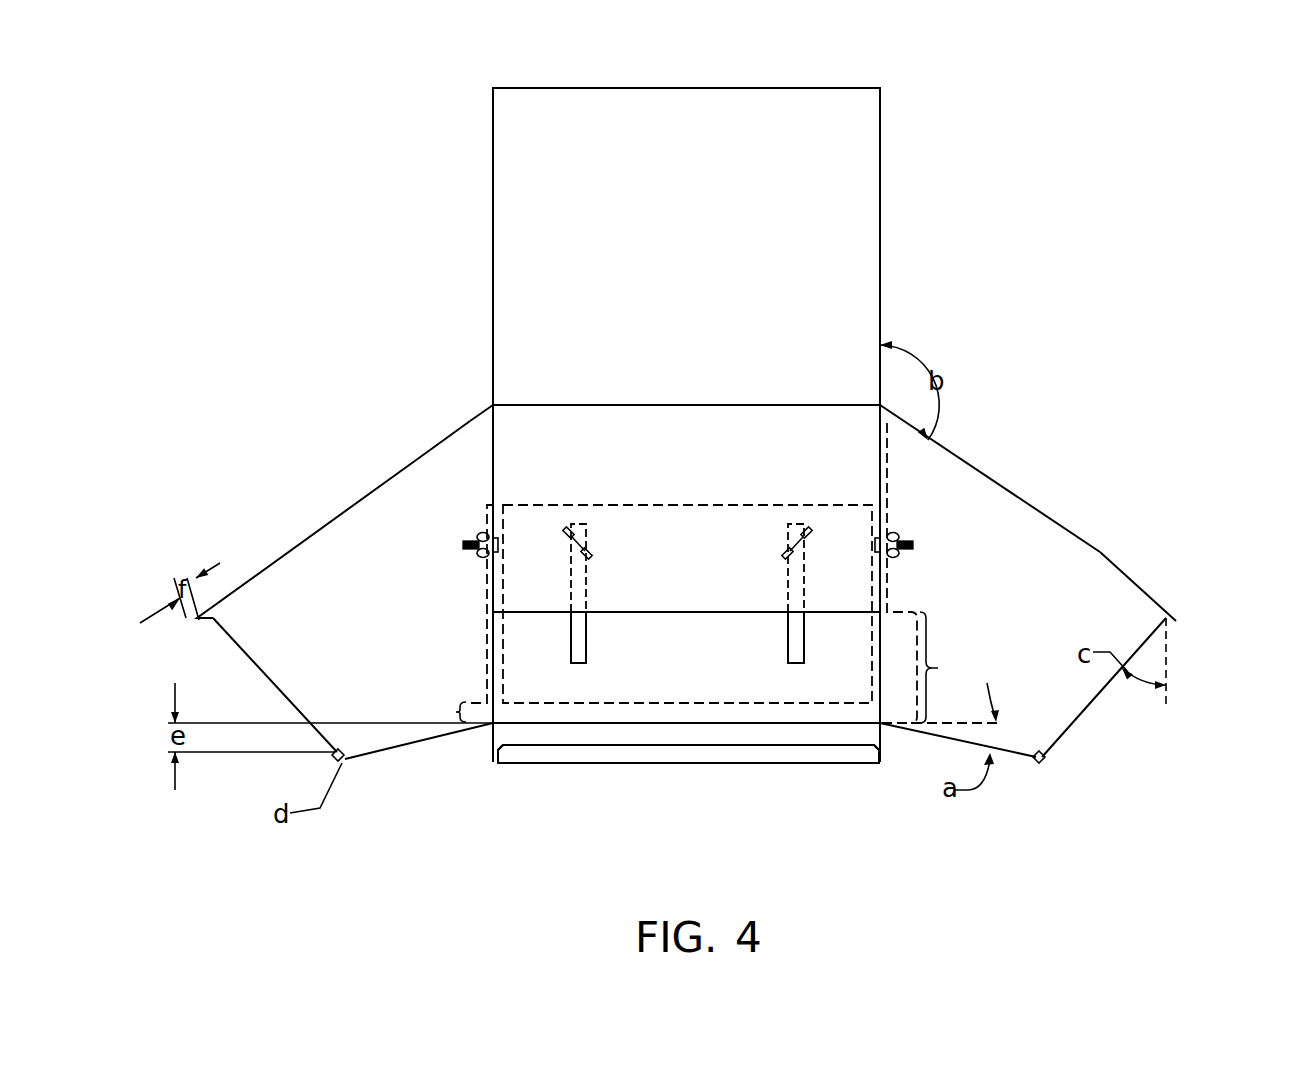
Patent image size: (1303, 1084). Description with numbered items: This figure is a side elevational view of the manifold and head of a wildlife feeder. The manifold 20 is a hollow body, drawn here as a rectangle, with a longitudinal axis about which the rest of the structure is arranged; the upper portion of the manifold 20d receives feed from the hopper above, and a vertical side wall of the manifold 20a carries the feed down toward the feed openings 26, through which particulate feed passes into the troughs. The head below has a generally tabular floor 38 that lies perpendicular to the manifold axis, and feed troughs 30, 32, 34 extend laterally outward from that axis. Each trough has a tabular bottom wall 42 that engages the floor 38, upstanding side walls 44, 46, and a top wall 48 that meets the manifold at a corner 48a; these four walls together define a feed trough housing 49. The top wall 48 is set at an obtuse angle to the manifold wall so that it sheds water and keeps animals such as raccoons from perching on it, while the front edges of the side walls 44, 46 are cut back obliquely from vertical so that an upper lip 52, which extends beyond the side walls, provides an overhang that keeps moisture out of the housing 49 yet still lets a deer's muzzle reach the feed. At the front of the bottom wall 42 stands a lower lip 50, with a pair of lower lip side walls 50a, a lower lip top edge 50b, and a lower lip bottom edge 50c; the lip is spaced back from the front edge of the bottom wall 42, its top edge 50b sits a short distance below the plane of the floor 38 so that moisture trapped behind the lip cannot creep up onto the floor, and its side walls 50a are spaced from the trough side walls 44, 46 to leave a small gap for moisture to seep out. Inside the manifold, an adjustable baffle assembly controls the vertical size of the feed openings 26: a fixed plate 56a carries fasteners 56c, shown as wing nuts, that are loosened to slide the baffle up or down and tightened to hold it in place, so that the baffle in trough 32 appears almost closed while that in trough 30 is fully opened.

The manifold 20 is at (557, 163).
The upper panel of housing 20d is at (493, 210).
The side wall of housing 20a is at (880, 235).
The feed trough 34 is at (647, 433).
The hinge corner 48a is at (492, 403).
The top wall 48 is at (453, 430).
The feed trough 32 is at (428, 495).
The side wall 44 is at (400, 603).
The feed trough 30 is at (947, 497).
The feed trough housing 49 is at (1102, 552).
The side wall 46 is at (1033, 601).
The upper lip 52 is at (1172, 622).
The fixed plate 56a is at (687, 574).
The fasteners 56c is at (907, 543).
The feed openings 26 is at (711, 575).
The floor 38 is at (638, 723).
The bottom wall 42 is at (389, 752).
The lower lip 50 is at (333, 758).
The lower lip side walls 50a is at (498, 763).
The lower lip top edge 50b is at (702, 747).
The lower lip bottom edge 50c is at (765, 763).